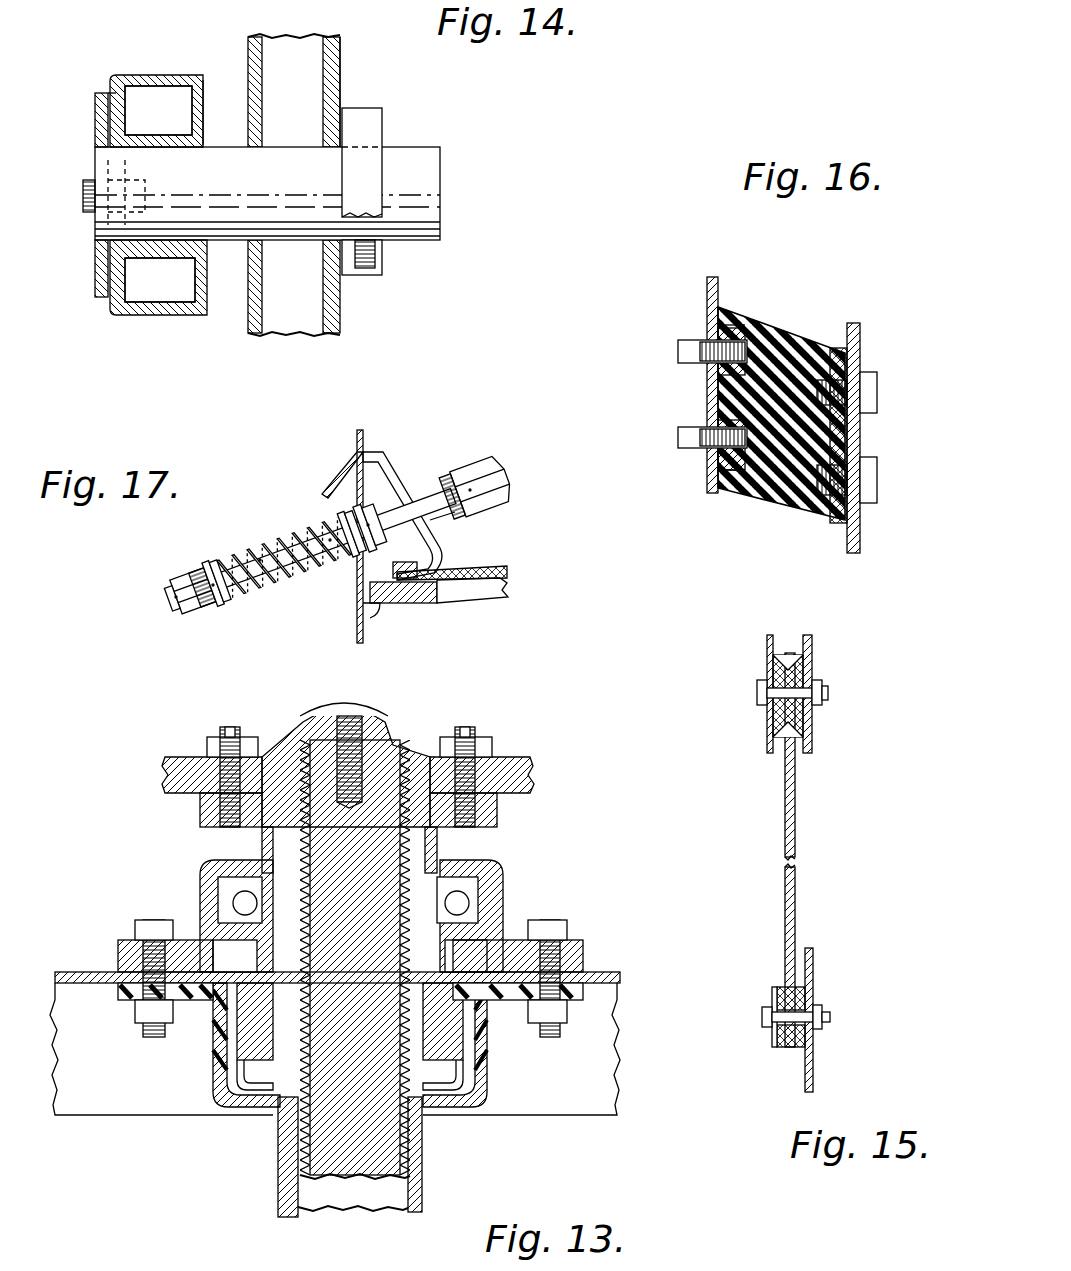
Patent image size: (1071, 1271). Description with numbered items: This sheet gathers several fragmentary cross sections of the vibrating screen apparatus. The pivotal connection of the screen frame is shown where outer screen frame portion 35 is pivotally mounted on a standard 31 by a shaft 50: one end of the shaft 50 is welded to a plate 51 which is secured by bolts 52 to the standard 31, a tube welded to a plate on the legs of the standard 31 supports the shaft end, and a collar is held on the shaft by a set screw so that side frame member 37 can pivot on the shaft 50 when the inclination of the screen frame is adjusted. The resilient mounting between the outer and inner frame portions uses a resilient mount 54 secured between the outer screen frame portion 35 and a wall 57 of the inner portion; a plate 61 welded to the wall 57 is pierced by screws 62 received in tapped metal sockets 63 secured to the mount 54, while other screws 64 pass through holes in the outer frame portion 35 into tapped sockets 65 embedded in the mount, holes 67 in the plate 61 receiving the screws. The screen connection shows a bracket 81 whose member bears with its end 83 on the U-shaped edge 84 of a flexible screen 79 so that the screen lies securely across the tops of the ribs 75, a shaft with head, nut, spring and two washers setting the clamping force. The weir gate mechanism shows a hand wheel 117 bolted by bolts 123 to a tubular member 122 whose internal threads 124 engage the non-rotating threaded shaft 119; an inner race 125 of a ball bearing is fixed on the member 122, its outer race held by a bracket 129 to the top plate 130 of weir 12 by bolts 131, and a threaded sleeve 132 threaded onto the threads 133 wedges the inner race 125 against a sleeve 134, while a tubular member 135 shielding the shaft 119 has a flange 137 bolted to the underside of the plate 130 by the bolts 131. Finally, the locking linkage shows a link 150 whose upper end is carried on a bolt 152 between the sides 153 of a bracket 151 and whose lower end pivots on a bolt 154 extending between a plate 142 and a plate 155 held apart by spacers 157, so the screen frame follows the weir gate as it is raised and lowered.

In FIG. 13, the weir 12 is at (69, 974).
In FIG. 14, the standard 31 is at (116, 77).
In FIG. 14, the outer screen frame portion 35 is at (338, 55).
In FIG. 16, the outer screen frame portion 35 is at (707, 284).
In FIG. 14, the side frame member 37 is at (340, 77).
In FIG. 14, the shaft 50 is at (440, 171).
In FIG. 14, the plate 51 is at (95, 105).
In FIG. 14, the bolt 52 is at (84, 184).
In FIG. 16, the resilient mount 54 is at (776, 334).
In FIG. 17, the wall 57 is at (356, 441).
In FIG. 16, the plate 61 is at (860, 541).
In FIG. 16, the screw 62 is at (877, 405).
In FIG. 16, the tapped metal socket 63 is at (835, 342).
In FIG. 16, the screw 64 is at (715, 360).
In FIG. 16, the tapped metal socket 65 is at (728, 318).
In FIG. 16, the hole 67 is at (877, 380).
In FIG. 17, the arcuate rib 75 is at (480, 595).
In FIG. 17, the flexible screen 79 is at (508, 556).
In FIG. 17, the bracket 81 is at (396, 456).
In FIG. 17, the end of member 83 is at (431, 565).
In FIG. 17, the U-shaped edge 84 is at (393, 604).
In FIG. 13, the hand wheel 117 is at (528, 764).
In FIG. 13, the threaded shaft 119 is at (278, 1164).
In FIG. 13, the tubular member 122 is at (478, 807).
In FIG. 13, the bolt 123 is at (230, 730).
In FIG. 13, the internal threads 124 is at (384, 732).
In FIG. 13, the inner race 125 is at (428, 851).
In FIG. 13, the bracket 129 is at (470, 882).
In FIG. 13, the top plate 130 is at (592, 962).
In FIG. 13, the bolt 131 is at (142, 920).
In FIG. 13, the threaded sleeve 132 is at (458, 1038).
In FIG. 13, the threads 133 is at (451, 1063).
In FIG. 13, the sleeve 134 is at (440, 838).
In FIG. 13, the tubular member 135 is at (422, 1158).
In FIG. 13, the flange 137 is at (128, 1010).
In FIG. 15, the plate 142 is at (813, 970).
In FIG. 15, the link 150 is at (796, 866).
In FIG. 15, the bracket 151 is at (799, 638).
In FIG. 15, the bolt 152 is at (756, 690).
In FIG. 15, the side of bracket 153 is at (765, 648).
In FIG. 15, the bolt 154 is at (761, 1028).
In FIG. 15, the plate 155 is at (772, 998).
In FIG. 15, the spacer 157 is at (783, 988).